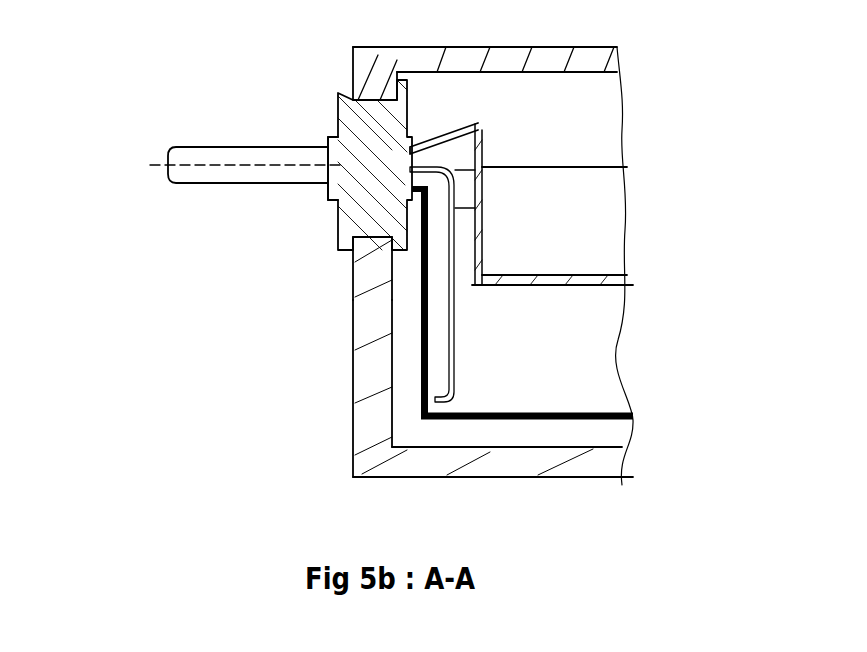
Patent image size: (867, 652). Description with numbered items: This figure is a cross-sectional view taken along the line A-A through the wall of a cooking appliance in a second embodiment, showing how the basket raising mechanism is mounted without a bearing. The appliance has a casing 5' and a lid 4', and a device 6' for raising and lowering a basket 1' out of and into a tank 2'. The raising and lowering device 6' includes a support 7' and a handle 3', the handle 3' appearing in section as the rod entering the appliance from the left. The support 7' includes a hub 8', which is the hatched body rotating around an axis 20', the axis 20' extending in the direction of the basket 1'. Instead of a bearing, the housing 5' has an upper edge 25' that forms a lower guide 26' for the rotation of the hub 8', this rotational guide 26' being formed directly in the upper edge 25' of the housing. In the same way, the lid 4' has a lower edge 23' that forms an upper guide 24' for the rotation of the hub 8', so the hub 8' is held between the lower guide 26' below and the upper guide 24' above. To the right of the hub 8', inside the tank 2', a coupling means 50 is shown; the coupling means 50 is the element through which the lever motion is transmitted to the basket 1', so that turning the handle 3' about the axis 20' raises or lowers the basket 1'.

The basket 1' is at (590, 226).
The tank 2' is at (562, 291).
The handle 3' is at (257, 153).
The lid 4' is at (548, 83).
The casing 5' is at (547, 438).
The device for raising and lowering the basket 6' is at (209, 283).
The support 7' is at (195, 239).
The hub 8' is at (255, 148).
The axis 20' is at (216, 196).
The lower edge of the lid 23' is at (318, 60).
The upper guide 24' is at (281, 158).
The upper edge of the housing 25' is at (278, 367).
The lower guide 26' is at (306, 282).
The coupling means 50 is at (480, 141).